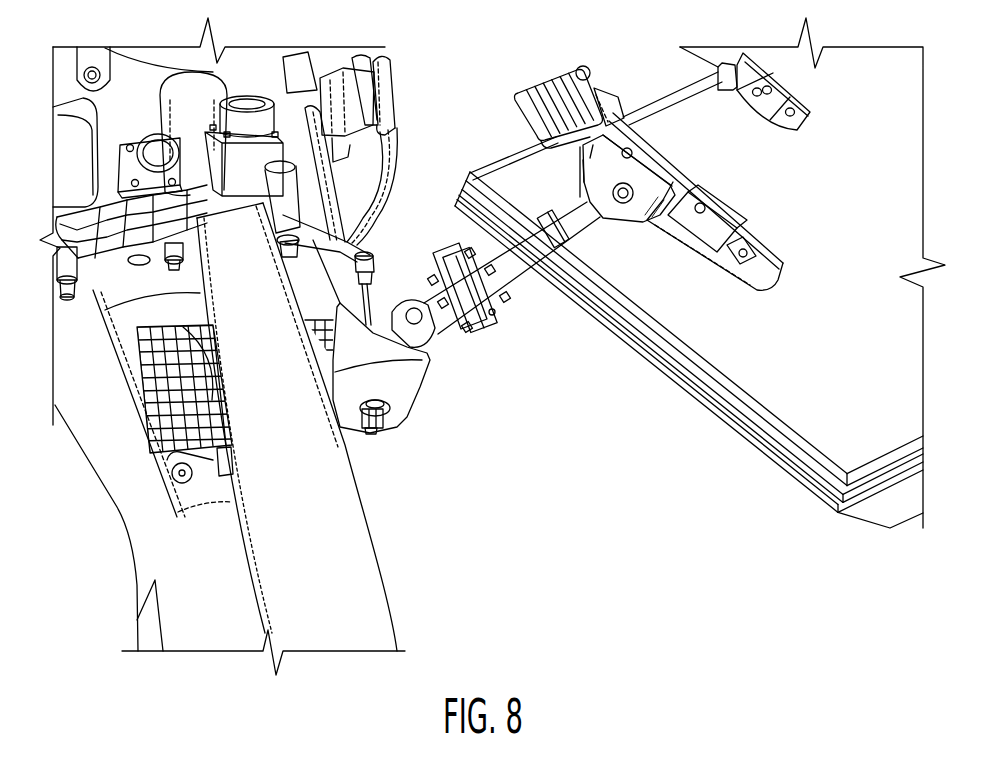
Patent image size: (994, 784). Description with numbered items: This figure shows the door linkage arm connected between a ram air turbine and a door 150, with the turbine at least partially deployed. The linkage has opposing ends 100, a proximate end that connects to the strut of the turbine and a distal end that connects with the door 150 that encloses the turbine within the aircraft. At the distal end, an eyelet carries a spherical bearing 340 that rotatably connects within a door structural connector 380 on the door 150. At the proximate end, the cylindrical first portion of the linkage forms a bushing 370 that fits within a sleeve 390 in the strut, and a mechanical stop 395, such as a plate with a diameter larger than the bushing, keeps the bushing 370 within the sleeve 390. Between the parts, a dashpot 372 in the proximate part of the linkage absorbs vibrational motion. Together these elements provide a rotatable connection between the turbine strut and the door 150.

The opposing ends 100 is at (135, 298).
The door 150 is at (800, 383).
The spherical bearing 340 is at (600, 246).
The bushing 370 is at (414, 438).
The dashpot 372 is at (497, 320).
The door structural connector 380 is at (680, 277).
The sleeve 390 is at (427, 408).
The mechanical stop 395 is at (397, 432).